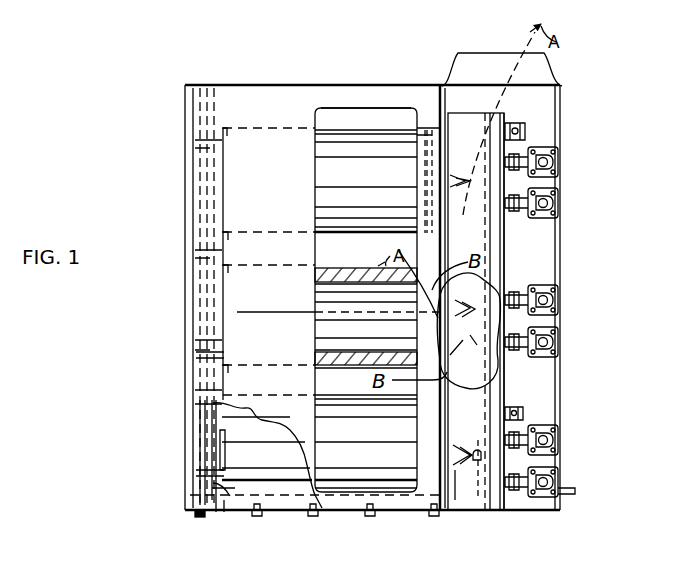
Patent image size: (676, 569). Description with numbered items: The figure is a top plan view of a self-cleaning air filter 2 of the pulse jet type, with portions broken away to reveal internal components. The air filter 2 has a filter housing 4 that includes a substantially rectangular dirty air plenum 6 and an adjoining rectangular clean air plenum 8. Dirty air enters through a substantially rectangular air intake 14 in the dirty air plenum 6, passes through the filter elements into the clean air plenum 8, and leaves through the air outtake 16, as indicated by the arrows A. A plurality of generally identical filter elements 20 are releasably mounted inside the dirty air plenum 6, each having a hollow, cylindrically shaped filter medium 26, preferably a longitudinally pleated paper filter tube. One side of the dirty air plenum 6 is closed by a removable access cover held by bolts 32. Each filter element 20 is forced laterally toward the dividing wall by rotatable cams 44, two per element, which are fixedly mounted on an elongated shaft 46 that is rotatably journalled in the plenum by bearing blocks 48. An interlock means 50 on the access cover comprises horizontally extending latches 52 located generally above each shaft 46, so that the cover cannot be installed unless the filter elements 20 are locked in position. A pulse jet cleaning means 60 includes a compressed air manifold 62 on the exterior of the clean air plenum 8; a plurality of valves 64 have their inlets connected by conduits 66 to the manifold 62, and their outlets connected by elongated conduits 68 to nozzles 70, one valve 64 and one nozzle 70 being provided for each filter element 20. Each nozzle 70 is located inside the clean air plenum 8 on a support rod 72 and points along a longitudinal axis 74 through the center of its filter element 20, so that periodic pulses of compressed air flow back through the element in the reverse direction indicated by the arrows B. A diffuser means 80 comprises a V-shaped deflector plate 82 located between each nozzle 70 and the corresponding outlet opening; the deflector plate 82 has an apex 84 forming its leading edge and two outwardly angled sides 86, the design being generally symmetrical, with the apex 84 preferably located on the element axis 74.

The air filter 2 is at (263, 83).
The filter housing 4 is at (323, 83).
The dirty air plenum 6 is at (245, 244).
The clean air plenum 8 is at (538, 252).
The air intake 14 is at (388, 108).
The air outtake 16 is at (496, 53).
The filter element 20 is at (333, 173).
The filter medium 26 is at (341, 269).
The bolts 32 is at (257, 518).
The rotatable cam 44 is at (205, 405).
The shaft 46 is at (208, 432).
The bearing block 48 is at (198, 353).
The interlock means 50 is at (195, 519).
The latch 52 is at (222, 514).
The pulse jet cleaning means 60 is at (572, 178).
The compressed air manifold 62 is at (500, 497).
The valve 64 is at (546, 441).
The conduit 66 is at (528, 430).
The elongated conduit 68 is at (505, 331).
The nozzle 70 is at (490, 300).
The support rod 72 is at (478, 496).
The longitudinal axis 74 is at (258, 311).
The diffuser means 80 is at (457, 484).
The V-shaped deflector plate 82 is at (458, 448).
The apex 84 is at (437, 337).
The outwardly angled sides 86 is at (470, 270).